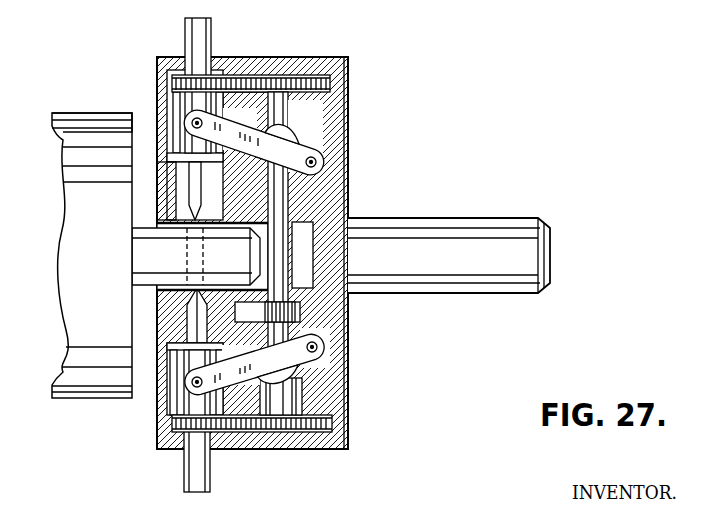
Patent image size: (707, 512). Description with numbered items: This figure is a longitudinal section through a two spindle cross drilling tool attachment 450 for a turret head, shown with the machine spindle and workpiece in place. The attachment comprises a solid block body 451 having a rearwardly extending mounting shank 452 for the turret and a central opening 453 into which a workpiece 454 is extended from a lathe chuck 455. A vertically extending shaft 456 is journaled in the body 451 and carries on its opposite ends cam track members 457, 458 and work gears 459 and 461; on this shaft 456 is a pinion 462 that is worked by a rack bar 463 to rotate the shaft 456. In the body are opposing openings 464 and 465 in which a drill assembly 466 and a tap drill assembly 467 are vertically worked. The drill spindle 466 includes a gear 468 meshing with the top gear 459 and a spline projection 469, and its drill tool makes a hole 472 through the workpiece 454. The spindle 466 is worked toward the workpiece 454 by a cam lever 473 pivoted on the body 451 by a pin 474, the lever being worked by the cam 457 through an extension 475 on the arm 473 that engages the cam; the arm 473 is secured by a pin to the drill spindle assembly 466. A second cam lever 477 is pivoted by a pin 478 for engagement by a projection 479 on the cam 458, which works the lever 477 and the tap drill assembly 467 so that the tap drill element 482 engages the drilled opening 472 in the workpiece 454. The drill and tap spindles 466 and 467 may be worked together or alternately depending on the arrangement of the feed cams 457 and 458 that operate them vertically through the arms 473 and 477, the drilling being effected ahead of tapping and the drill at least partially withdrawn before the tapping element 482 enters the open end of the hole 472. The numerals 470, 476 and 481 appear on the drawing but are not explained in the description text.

The two spindle cross drilling tool attachment 450 is at (360, 100).
The solid block body 451 is at (335, 172).
The mounting shank 452 is at (440, 238).
The central opening 453 is at (302, 258).
The workpiece 454 is at (146, 236).
The lathe chuck 455 is at (78, 242).
The vertically extending shaft 456 is at (328, 196).
The cam track member 457 is at (340, 118).
The cam track member 458 is at (282, 397).
The work gear 459 is at (292, 96).
The work gear 461 is at (314, 432).
The pinion 462 is at (333, 312).
The rack bar 463 is at (322, 343).
The opening 464 is at (176, 190).
The opening 465 is at (165, 330).
The drill assembly 466 is at (168, 100).
The tap drill assembly 467 is at (175, 402).
The gear 468 is at (183, 98).
The spline projection 469 is at (200, 40).
The drum flange 470 is at (84, 181).
The hole 472 is at (194, 257).
The cam lever 473 is at (232, 130).
The pin 474 is at (313, 160).
The extension 475 is at (276, 132).
The upper lever pivot 476 is at (190, 122).
The cam lever 477 is at (255, 372).
The pin 478 is at (300, 365).
The projection 479 is at (273, 432).
The lower lever pivot 481 is at (193, 384).
The tap drill element 482 is at (193, 312).